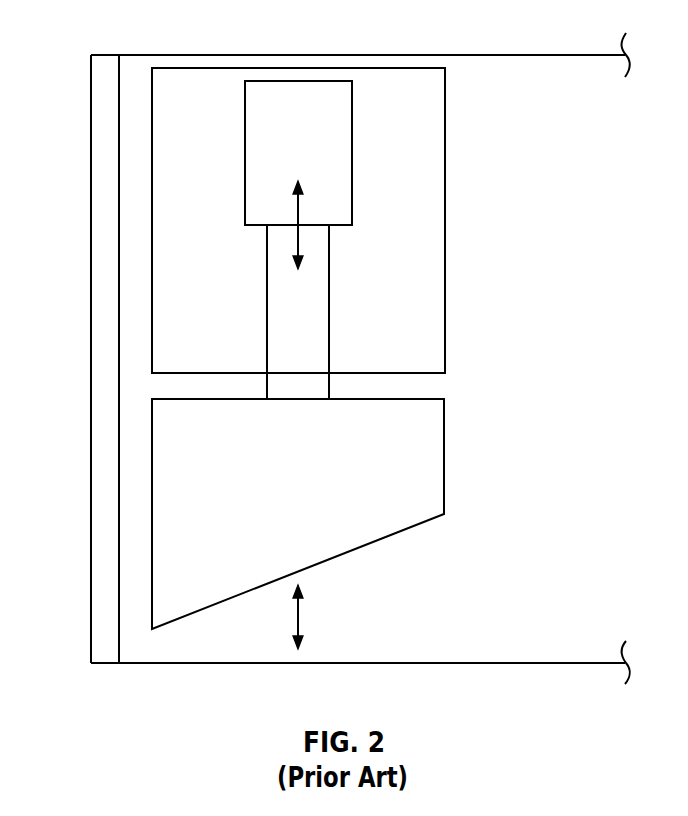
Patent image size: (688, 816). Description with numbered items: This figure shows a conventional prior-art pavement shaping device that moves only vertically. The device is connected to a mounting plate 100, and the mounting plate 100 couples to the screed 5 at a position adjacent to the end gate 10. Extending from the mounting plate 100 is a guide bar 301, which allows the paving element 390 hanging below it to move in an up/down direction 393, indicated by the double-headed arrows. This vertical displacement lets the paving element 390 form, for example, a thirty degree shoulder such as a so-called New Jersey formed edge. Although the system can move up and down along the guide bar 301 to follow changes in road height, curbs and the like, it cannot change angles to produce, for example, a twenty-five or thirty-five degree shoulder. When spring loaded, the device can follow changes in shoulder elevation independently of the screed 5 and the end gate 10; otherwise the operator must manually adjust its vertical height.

The screed 5 is at (537, 72).
The end gate 10 is at (104, 263).
The mounting plate 100 is at (430, 172).
The guide bar 301 is at (318, 325).
The paving element 390 is at (432, 450).
The up/down direction 393 is at (300, 235).